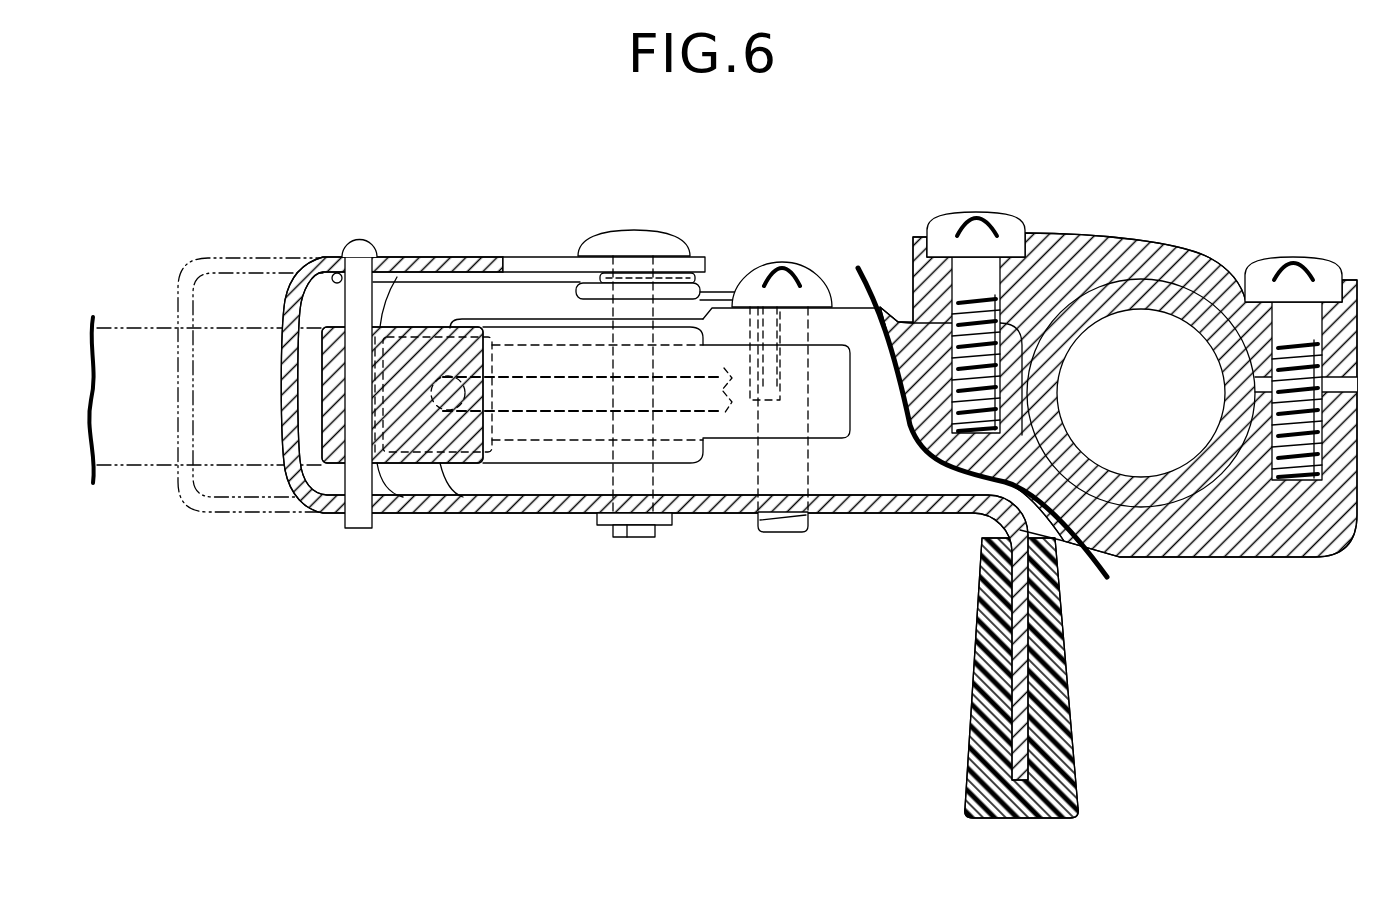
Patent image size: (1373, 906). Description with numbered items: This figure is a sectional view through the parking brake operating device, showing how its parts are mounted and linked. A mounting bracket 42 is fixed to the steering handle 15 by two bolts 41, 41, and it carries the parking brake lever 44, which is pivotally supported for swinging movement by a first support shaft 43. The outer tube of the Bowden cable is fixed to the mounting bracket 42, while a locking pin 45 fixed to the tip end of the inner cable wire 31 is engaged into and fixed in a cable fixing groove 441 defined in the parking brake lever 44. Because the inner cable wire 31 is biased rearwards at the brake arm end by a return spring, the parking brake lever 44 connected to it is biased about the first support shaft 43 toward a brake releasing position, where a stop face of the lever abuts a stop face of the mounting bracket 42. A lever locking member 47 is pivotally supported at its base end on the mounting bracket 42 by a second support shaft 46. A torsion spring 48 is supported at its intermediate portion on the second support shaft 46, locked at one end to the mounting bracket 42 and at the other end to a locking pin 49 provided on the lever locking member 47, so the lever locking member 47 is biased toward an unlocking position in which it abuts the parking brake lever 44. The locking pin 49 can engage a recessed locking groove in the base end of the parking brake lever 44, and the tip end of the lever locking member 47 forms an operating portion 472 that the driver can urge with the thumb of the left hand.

The steering handle 15 is at (1173, 297).
The inner cable wire 31 is at (702, 395).
The bolt 41 is at (996, 236).
The mounting bracket 42 is at (530, 311).
The first support shaft 43 is at (811, 276).
The parking brake lever 44 is at (422, 465).
The cable fixing groove 441 is at (438, 335).
The locking pin 45 is at (405, 340).
The second support shaft 46 is at (630, 245).
The lever locking member 47 is at (548, 526).
The operating portion 472 is at (983, 691).
The torsion spring 48 is at (703, 297).
The locking pin 49 is at (355, 304).